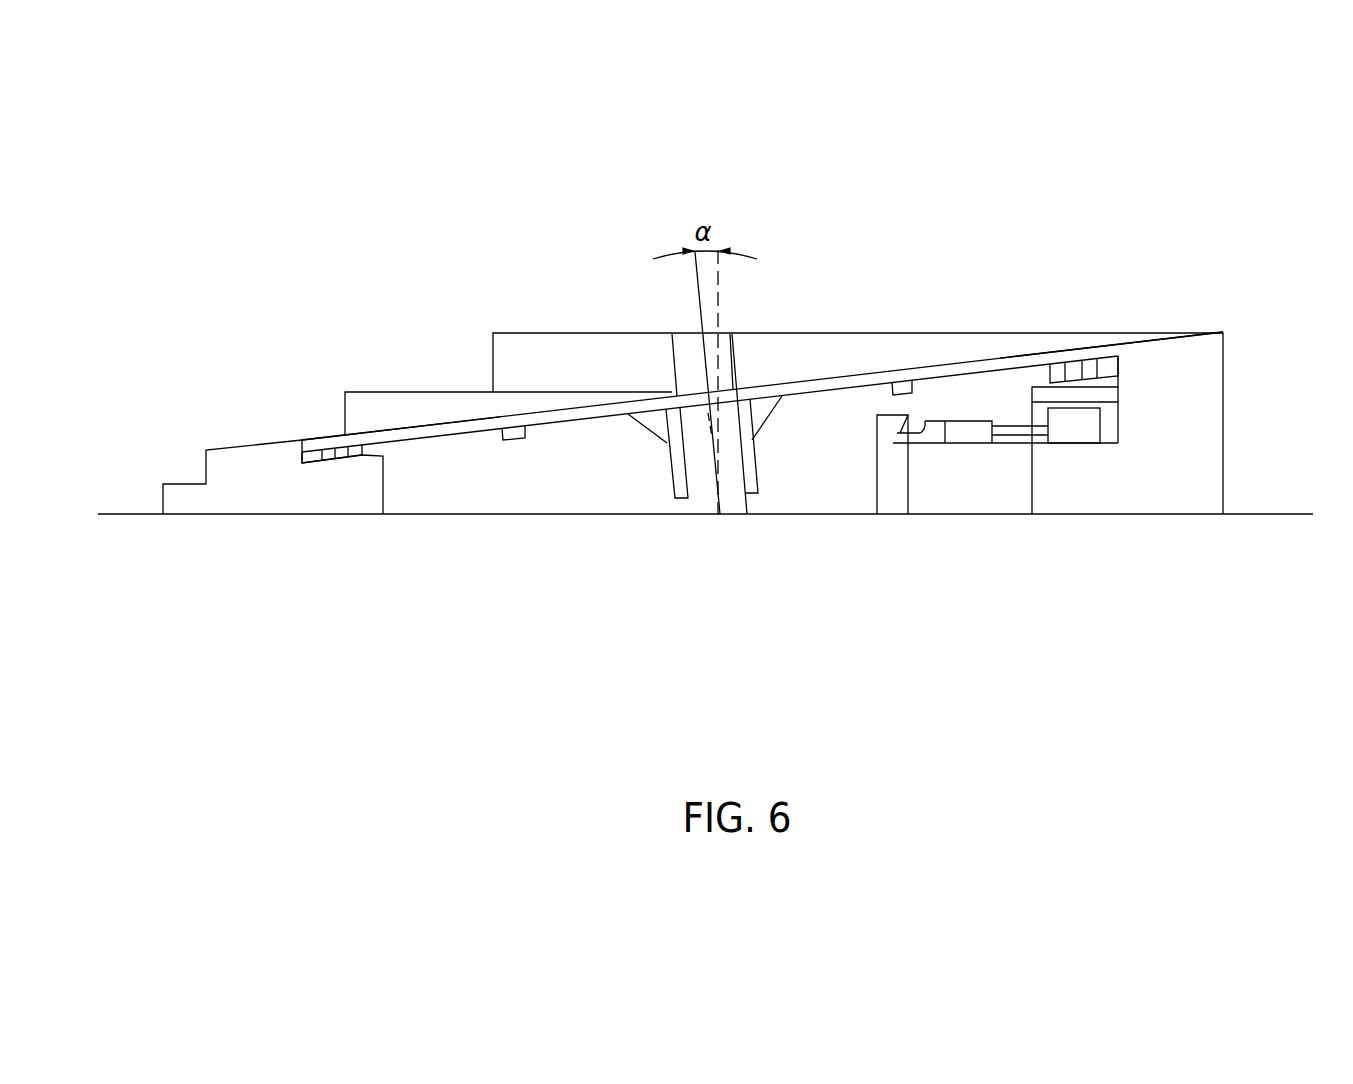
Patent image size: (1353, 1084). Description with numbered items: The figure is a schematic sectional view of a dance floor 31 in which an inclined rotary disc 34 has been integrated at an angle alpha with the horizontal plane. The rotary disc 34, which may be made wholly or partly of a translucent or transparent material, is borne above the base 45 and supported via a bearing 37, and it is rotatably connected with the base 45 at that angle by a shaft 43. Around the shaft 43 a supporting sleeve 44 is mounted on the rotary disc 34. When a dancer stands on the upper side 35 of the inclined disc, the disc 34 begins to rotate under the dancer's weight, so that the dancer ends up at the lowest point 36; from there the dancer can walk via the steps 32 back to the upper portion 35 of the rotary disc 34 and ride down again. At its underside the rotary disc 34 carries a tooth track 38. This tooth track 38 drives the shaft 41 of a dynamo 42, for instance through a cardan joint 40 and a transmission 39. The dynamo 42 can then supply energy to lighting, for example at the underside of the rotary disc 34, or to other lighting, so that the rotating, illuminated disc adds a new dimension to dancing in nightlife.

The dance floor 31 is at (513, 323).
The steps 32 is at (387, 390).
The rotary disc 34 is at (847, 383).
The upper side of rotary disc 35 is at (1067, 337).
The lowest point 36 is at (325, 437).
The bearing 37 is at (355, 452).
The tooth track 38 is at (512, 432).
The transmission 39 is at (963, 432).
The cardan joint 40 is at (903, 443).
The shaft of dynamo 41 is at (1018, 430).
The dynamo 42 is at (1088, 428).
The shaft 43 is at (714, 455).
The supporting sleeve 44 is at (672, 462).
The base 45 is at (210, 515).